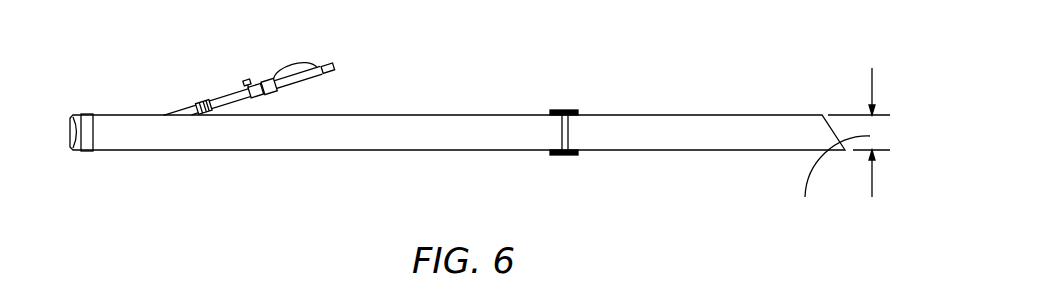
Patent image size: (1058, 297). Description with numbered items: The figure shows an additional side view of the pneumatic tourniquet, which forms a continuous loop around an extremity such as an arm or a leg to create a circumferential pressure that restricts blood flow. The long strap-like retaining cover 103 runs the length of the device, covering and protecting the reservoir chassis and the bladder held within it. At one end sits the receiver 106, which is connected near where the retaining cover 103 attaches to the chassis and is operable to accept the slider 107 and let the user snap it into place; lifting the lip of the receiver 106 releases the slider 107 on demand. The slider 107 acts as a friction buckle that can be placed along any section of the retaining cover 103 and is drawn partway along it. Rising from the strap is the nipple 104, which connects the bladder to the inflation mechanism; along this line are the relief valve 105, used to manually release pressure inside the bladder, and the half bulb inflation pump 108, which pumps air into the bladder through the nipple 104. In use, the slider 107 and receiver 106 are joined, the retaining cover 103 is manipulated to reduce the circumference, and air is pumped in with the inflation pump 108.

The retaining cover 103 is at (470, 112).
The nipple 104 is at (242, 92).
The relief valve 105 is at (253, 77).
The receiver 106 is at (76, 112).
The slider 107 is at (557, 115).
The inflation pump 108 is at (296, 58).